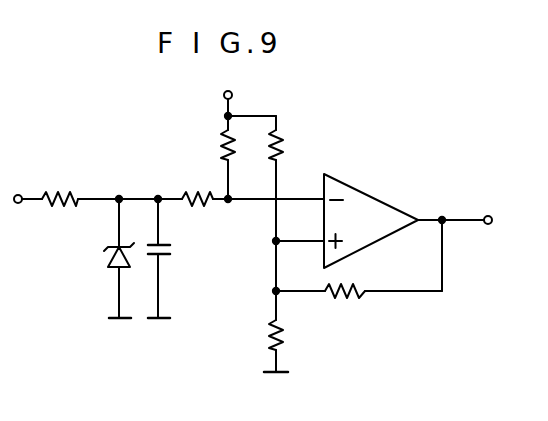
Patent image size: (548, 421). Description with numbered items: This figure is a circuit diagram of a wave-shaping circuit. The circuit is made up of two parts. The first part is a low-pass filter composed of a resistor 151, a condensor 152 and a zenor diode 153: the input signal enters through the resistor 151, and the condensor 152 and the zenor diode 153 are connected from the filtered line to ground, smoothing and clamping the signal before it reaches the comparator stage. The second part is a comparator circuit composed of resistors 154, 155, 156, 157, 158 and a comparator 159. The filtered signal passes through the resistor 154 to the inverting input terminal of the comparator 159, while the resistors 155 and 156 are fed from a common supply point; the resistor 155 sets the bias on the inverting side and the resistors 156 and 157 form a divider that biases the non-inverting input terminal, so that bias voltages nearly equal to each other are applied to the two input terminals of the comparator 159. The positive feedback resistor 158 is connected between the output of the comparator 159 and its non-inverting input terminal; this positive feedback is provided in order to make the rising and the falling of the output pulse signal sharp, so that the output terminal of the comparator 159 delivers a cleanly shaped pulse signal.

The resistor 151 is at (64, 204).
The condensor 152 is at (172, 258).
The zenor diode 153 is at (115, 263).
The resistor 154 is at (196, 196).
The resistor 155 is at (222, 144).
The resistor 156 is at (281, 150).
The resistor 157 is at (268, 338).
The positive feedback resistor 158 is at (347, 298).
The comparator 159 is at (383, 197).